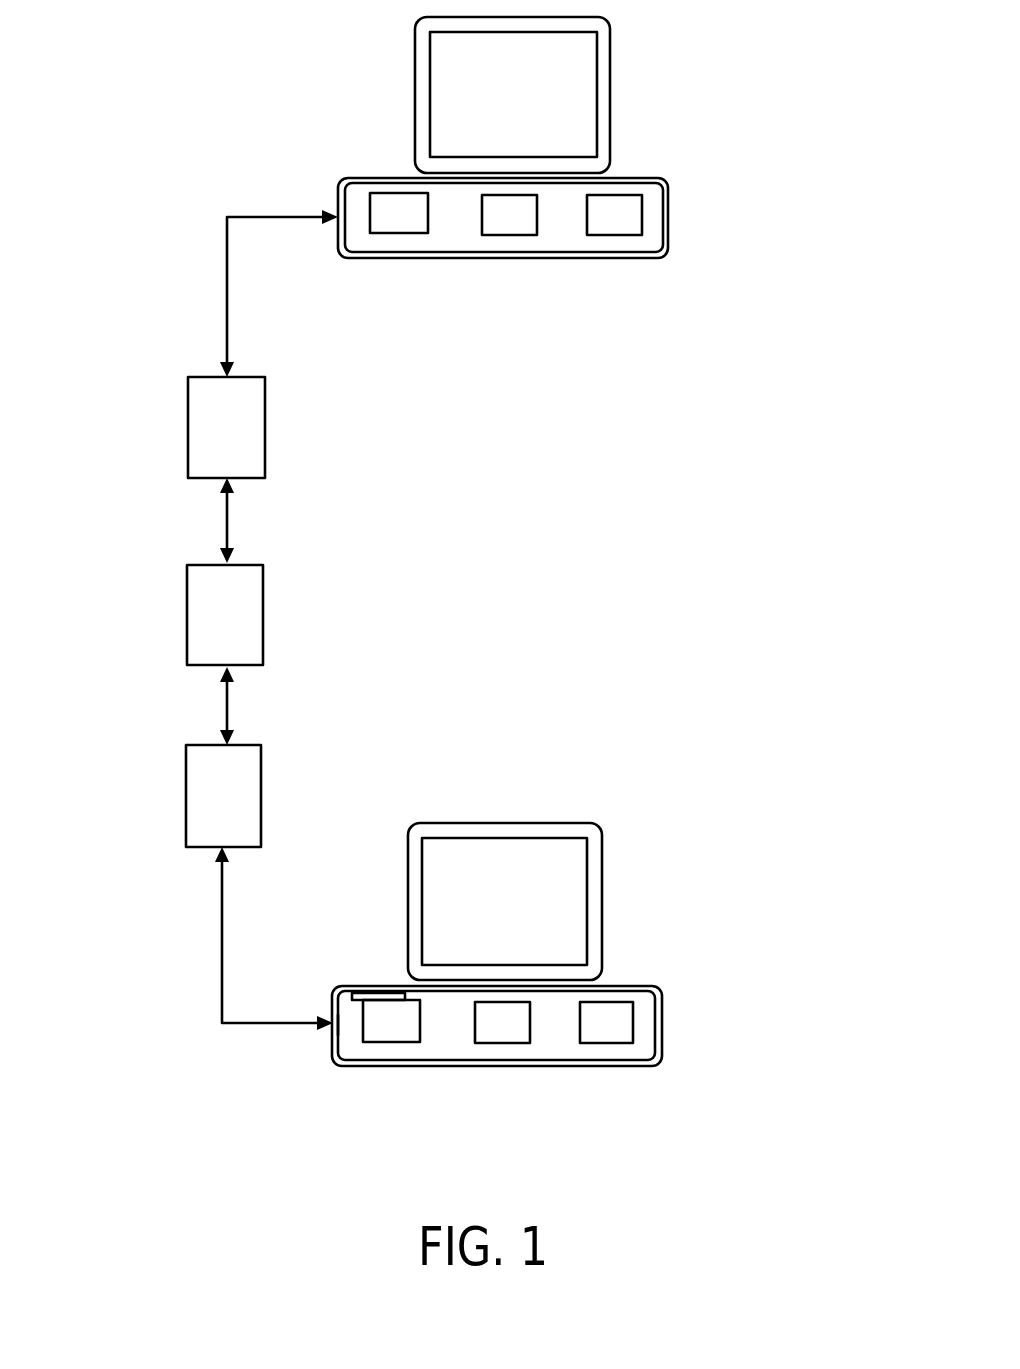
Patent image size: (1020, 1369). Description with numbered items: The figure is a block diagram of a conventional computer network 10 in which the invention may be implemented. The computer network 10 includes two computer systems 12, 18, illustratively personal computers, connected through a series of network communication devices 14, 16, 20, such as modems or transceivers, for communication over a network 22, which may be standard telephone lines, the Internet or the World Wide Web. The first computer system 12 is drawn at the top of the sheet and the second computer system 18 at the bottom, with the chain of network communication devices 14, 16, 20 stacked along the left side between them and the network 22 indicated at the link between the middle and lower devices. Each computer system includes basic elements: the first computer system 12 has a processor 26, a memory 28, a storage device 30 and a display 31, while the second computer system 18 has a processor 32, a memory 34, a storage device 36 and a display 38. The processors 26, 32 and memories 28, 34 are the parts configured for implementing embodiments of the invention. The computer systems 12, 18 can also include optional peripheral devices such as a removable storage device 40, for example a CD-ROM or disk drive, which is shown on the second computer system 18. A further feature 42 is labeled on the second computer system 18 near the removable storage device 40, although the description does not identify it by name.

The computer network 10 is at (636, 518).
The computer system 12 is at (608, 25).
The network communication device 14 is at (210, 410).
The network communication device 16 is at (210, 607).
The computer system 18 is at (590, 837).
The network communication device 20 is at (217, 790).
The network 22 is at (223, 700).
The processor 26 is at (398, 234).
The memory 28 is at (510, 253).
The storage device 30 is at (615, 248).
The display 31 is at (563, 131).
The processor 32 is at (388, 1053).
The memory 34 is at (505, 1048).
The storage device 36 is at (610, 1053).
The display 38 is at (545, 930).
The removable storage device 40 is at (362, 986).
The connection port 42 is at (347, 1027).